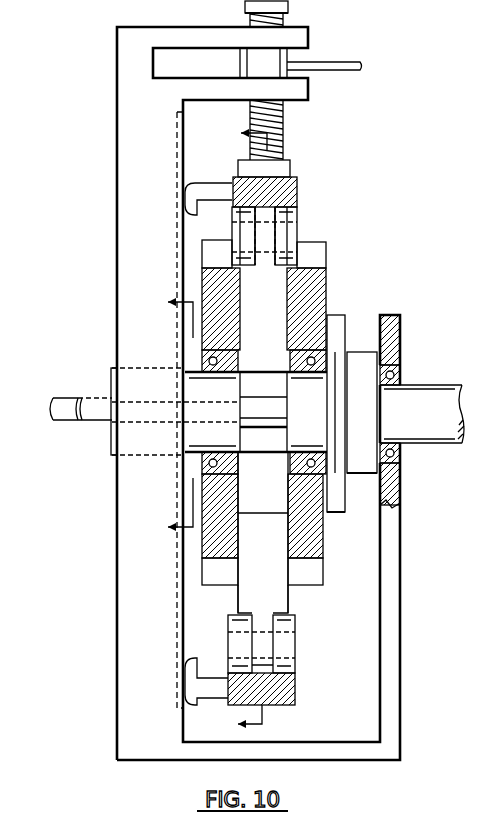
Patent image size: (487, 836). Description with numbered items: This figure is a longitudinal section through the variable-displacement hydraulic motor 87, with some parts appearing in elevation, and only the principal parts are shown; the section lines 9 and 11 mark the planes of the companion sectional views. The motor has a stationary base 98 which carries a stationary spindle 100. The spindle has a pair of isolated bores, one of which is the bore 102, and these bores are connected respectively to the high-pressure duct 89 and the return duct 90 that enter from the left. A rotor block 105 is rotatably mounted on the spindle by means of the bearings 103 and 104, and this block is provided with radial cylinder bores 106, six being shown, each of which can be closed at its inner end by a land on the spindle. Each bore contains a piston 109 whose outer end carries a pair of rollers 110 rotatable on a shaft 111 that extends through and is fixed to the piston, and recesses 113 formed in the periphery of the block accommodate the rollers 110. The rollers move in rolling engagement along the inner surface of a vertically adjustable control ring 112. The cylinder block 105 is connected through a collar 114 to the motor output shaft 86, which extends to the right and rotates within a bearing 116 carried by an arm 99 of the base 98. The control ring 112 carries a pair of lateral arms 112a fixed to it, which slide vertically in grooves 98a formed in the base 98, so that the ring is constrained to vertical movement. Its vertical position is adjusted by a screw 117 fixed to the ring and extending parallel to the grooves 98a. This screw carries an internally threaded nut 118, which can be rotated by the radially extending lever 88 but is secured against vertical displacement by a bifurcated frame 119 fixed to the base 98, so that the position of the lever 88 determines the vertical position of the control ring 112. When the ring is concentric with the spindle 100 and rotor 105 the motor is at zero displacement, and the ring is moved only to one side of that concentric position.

The section line 9- 9 is at (241, 431).
The section line 11- 11 is at (170, 414).
The motor output shaft 86 is at (434, 385).
The variable-displacement motor 87 is at (357, 192).
The lever 88 is at (340, 64).
The high-pressure duct 89 is at (60, 398).
The return duct 90 is at (100, 396).
The stationary base 98 is at (143, 762).
The grooves 98a is at (177, 243).
The arm 99 is at (401, 333).
The stationary spindle 100 is at (112, 372).
The bore 102 is at (111, 436).
The bearing 103 is at (223, 356).
The bearing 104 is at (305, 468).
The rotor block 105 is at (222, 272).
The radial cylinder bores 106 is at (283, 507).
The piston 109 is at (285, 602).
The rollers 110 is at (290, 235).
The shaft 111 is at (288, 627).
The control ring 112 is at (297, 192).
The lateral arms 112a is at (216, 187).
The recesses 113 is at (230, 243).
The collar 114 is at (372, 342).
The bearing 116 is at (399, 458).
The screw 117 is at (284, 23).
The nut 118 is at (243, 68).
The bifurcated frame 119 is at (213, 30).